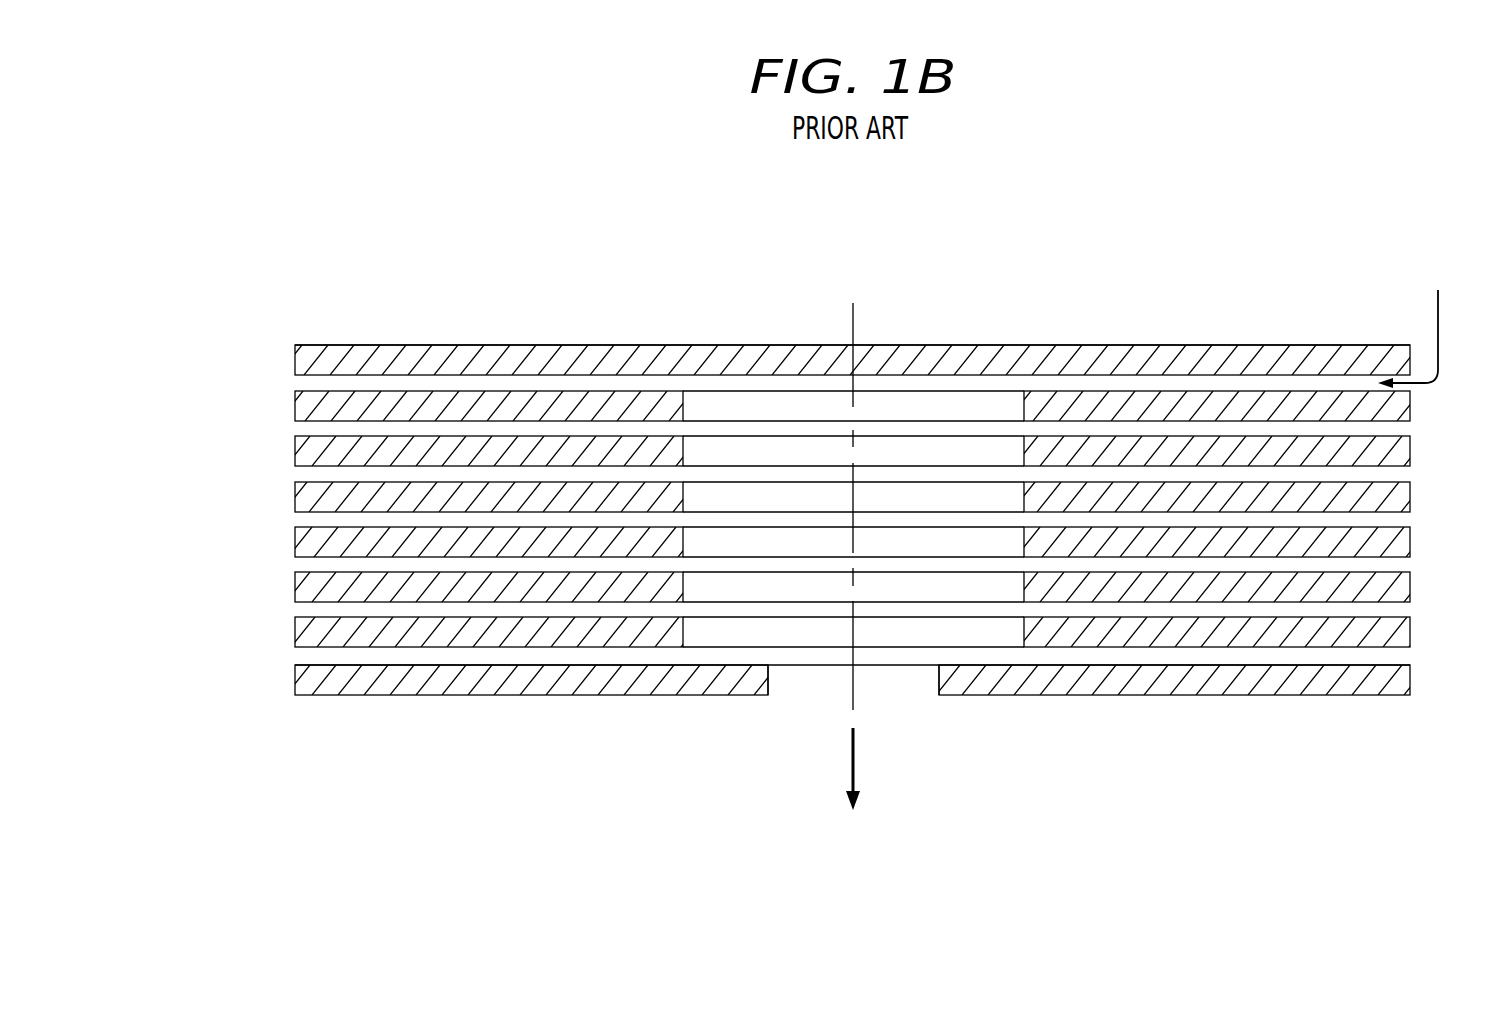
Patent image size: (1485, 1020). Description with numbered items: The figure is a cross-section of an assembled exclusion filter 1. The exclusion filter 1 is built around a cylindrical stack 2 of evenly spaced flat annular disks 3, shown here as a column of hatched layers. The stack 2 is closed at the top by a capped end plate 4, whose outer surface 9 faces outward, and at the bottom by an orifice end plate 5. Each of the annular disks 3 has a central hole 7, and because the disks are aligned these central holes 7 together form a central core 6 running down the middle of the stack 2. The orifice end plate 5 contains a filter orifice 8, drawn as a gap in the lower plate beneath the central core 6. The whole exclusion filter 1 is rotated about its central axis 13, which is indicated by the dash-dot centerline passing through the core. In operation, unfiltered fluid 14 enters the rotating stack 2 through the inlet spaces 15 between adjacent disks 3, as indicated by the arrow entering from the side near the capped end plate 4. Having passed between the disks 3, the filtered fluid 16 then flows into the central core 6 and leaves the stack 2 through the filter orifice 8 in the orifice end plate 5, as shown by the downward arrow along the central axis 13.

The exclusion filter 1 is at (287, 347).
The cylindrical stack 2 is at (858, 551).
The annular disks 3 is at (1411, 632).
The capped end plate 4 is at (1262, 345).
The orifice end plate 5 is at (1248, 695).
The central core 6 is at (287, 375).
The central holes 7 is at (955, 450).
The filter orifice 8 is at (939, 703).
The outer surface 9 is at (1184, 345).
The central axis 13 is at (853, 310).
The unfiltered fluid 14 is at (1416, 323).
The inlet spaces 15 is at (1411, 658).
The filtered fluid 16 is at (853, 788).